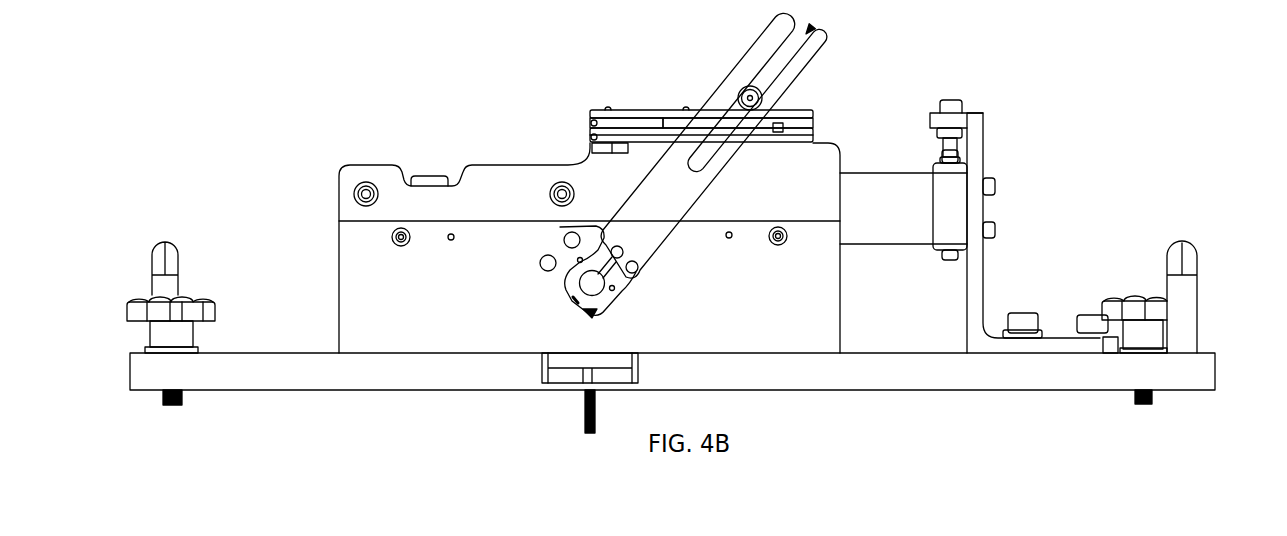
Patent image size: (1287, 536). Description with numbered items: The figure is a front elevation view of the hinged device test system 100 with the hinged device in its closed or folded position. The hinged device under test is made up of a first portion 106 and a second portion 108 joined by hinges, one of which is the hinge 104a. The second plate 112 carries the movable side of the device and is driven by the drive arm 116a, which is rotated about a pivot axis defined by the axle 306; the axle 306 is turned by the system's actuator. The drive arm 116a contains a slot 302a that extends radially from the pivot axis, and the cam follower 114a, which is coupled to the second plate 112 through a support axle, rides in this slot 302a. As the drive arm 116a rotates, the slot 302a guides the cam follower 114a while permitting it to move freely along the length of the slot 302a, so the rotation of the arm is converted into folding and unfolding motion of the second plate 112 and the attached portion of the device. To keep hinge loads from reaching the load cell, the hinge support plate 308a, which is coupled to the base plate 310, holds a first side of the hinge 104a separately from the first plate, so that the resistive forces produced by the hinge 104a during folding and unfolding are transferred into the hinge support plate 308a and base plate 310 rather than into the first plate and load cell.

The hinged device test system 100 is at (249, 54).
The hinge 104a is at (588, 121).
The first portion 106 is at (814, 138).
The second portion 108 is at (814, 117).
The second plate 112 is at (648, 116).
The cam follower 114a is at (745, 90).
The drive arm 116a is at (798, 78).
The slot 302a is at (812, 26).
The axle 306 is at (603, 291).
The hinge support plate 308a is at (497, 173).
The base plate 310 is at (1213, 357).